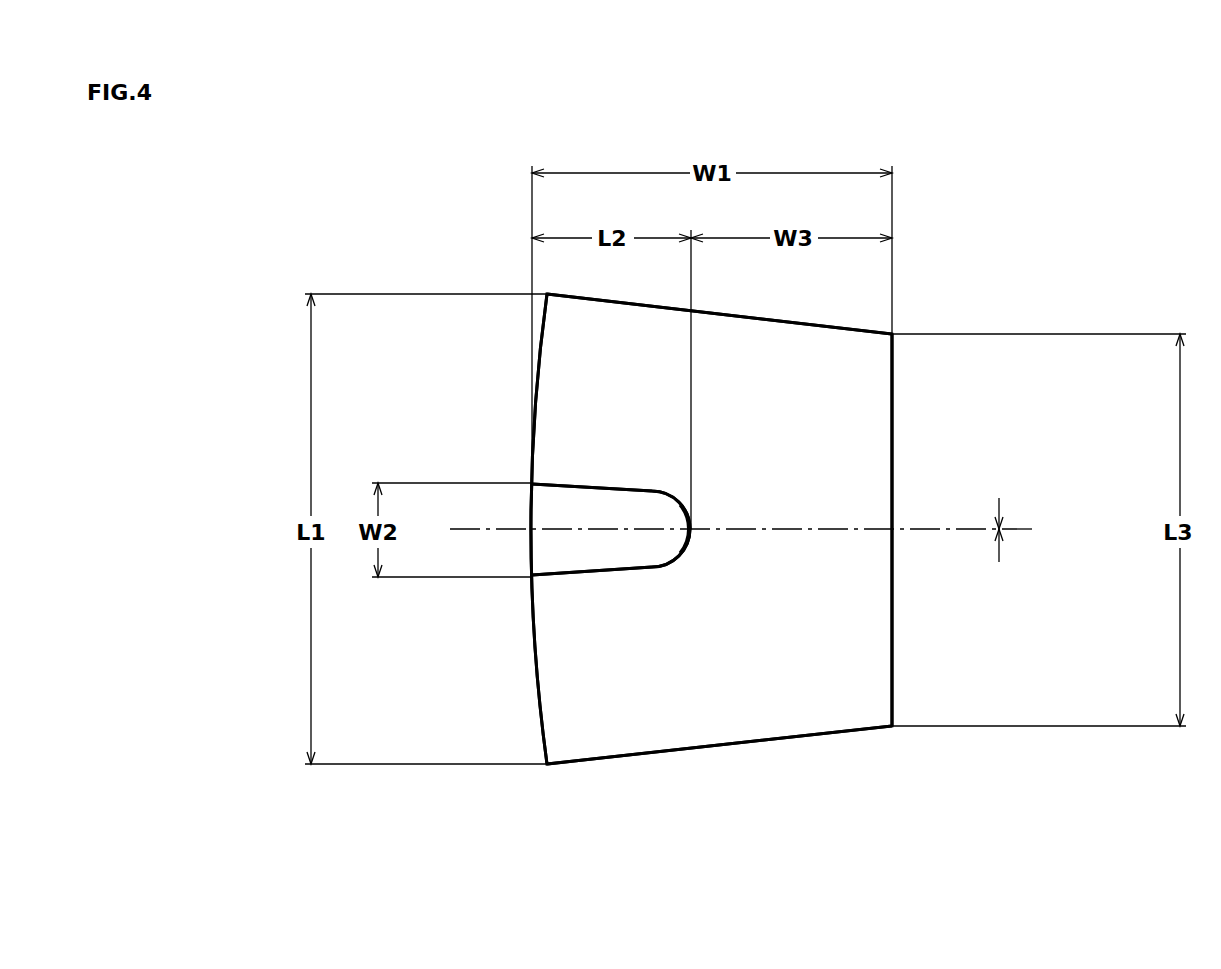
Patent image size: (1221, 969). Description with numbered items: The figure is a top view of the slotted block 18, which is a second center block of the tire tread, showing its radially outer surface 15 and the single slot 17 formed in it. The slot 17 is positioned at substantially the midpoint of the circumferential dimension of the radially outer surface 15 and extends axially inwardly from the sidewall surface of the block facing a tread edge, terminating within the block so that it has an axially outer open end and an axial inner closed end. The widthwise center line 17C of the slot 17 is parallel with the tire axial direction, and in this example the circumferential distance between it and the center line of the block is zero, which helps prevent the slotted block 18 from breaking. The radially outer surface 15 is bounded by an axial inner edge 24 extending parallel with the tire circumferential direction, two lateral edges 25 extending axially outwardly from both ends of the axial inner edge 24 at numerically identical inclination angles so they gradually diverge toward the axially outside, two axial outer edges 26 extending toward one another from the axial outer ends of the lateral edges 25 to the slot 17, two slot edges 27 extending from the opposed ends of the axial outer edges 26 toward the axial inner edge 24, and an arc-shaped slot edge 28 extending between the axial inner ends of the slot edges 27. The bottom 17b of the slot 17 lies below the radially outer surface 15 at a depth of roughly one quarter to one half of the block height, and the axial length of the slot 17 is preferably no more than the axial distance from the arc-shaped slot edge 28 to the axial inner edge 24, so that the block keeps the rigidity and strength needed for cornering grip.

The radially outer surface 15 is at (557, 333).
The slotted block 18 is at (907, 312).
The lateral edges 25 is at (790, 318).
The axial inner edge 24 is at (893, 598).
The axial outer edges 26 is at (540, 362).
The slot 17 is at (655, 546).
The slot edges 27 is at (606, 490).
The bottom of the slot 17b is at (623, 548).
The arc-shaped slot edge 28 is at (691, 545).
The widthwise center line of the slot 17C is at (1000, 532).